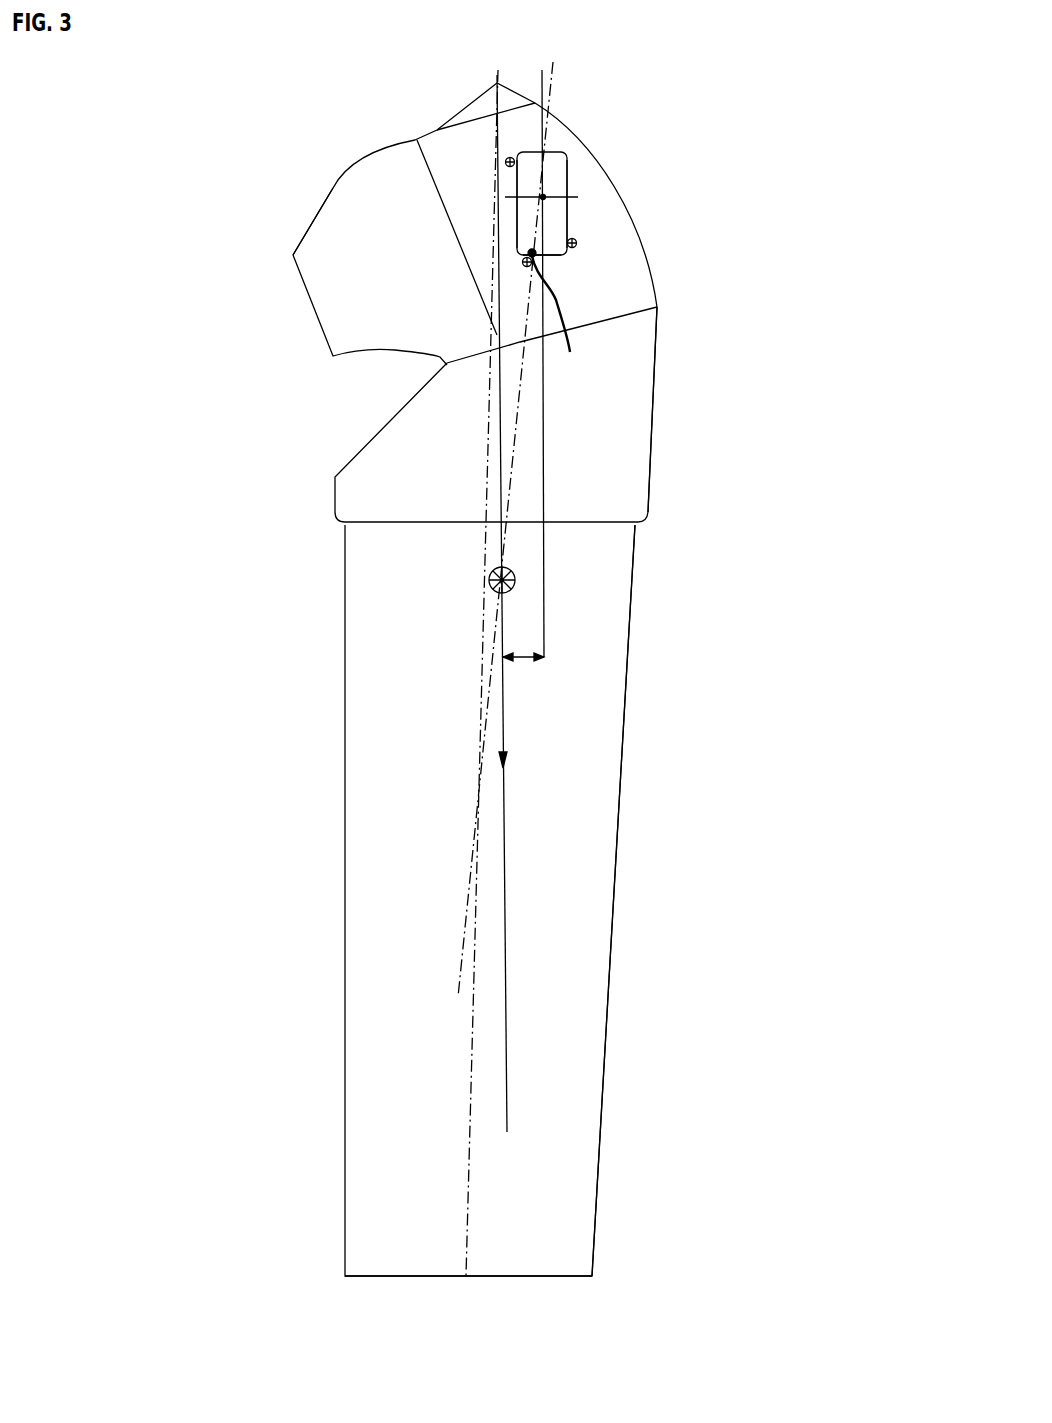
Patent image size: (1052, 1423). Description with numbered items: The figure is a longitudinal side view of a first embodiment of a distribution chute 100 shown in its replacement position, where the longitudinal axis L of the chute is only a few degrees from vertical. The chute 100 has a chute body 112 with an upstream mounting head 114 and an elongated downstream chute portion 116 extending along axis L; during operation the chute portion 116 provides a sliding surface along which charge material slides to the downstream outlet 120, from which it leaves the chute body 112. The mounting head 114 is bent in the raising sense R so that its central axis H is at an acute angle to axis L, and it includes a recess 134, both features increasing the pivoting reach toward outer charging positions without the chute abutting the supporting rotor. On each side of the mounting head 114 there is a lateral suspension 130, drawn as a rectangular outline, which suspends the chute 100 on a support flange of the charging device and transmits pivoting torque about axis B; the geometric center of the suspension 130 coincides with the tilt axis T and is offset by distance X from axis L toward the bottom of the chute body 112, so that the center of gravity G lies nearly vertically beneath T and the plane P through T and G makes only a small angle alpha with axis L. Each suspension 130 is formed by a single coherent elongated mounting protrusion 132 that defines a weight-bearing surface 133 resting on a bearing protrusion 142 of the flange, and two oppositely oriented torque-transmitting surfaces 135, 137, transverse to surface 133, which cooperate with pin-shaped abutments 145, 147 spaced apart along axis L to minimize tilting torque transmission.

The chute 100 is at (213, 318).
The chute body 112 is at (643, 778).
The mounting head 114 is at (640, 394).
The downstream chute portion 116 is at (600, 948).
The downstream outlet 120 is at (575, 1278).
The lateral suspension 130 is at (556, 147).
The mounting protrusion 132 is at (555, 167).
The weight-bearing surface 133 is at (559, 256).
The recess 134 is at (382, 408).
The torque-transmitting surface 135 is at (518, 223).
The torque-transmitting surface 137 is at (567, 218).
The bearing protrusion 142 is at (566, 324).
The abutment 145 is at (513, 157).
The abutment 147 is at (577, 243).